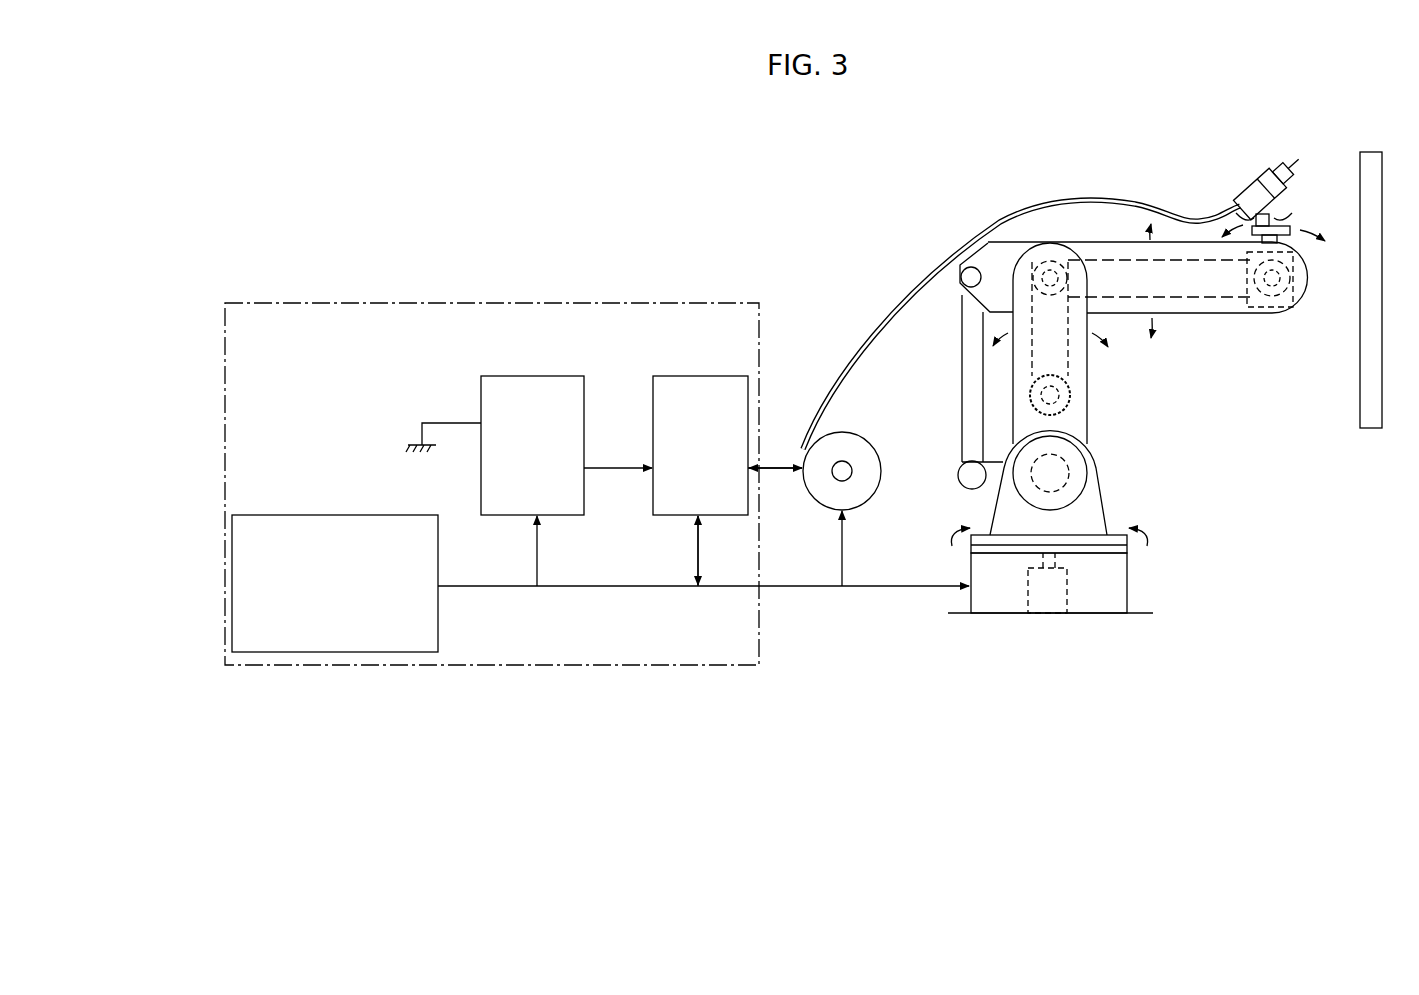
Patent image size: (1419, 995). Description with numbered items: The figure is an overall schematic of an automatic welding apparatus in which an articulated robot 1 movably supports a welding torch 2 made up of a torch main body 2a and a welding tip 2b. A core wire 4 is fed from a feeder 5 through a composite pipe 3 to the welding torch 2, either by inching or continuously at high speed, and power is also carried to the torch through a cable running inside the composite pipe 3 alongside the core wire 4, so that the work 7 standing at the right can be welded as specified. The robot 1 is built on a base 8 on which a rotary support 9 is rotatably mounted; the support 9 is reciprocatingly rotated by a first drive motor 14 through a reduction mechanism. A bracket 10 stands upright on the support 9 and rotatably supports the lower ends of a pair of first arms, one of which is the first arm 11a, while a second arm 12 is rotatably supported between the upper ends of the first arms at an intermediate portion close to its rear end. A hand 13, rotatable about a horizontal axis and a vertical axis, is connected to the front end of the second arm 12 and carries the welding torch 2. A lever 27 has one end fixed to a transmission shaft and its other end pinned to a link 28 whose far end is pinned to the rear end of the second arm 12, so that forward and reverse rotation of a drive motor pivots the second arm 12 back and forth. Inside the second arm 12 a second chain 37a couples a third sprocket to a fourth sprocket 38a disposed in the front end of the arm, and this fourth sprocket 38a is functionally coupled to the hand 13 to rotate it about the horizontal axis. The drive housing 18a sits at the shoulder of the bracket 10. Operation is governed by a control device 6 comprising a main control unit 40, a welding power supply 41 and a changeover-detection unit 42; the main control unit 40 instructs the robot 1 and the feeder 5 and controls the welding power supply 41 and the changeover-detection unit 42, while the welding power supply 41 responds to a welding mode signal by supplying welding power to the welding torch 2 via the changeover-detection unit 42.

The articulated robot 1 is at (1150, 428).
The welding torch 2 is at (1236, 156).
The torch main body 2a is at (1253, 196).
The welding tip 2b is at (1278, 170).
The composite pipe 3 is at (951, 252).
The core wire 4 is at (1289, 166).
The feeder 5 is at (873, 497).
The control device 6 is at (412, 301).
The work 7 is at (1373, 152).
The base 8 is at (1120, 594).
The rotary support 9 is at (1105, 557).
The bracket 10 is at (1097, 506).
The first arm 11a is at (1088, 386).
The second arm 12 is at (1183, 316).
The hand 13 is at (1284, 238).
The first drive motor 14 is at (1068, 600).
The shoulder housing 18a is at (1092, 461).
The lever 27 is at (987, 486).
The link 28 is at (970, 389).
The second chain 37a is at (1221, 297).
The fourth sprocket 38a is at (1288, 298).
The main control unit 40 is at (308, 514).
The welding power supply 41 is at (544, 380).
The changeover-detection unit 42 is at (656, 376).